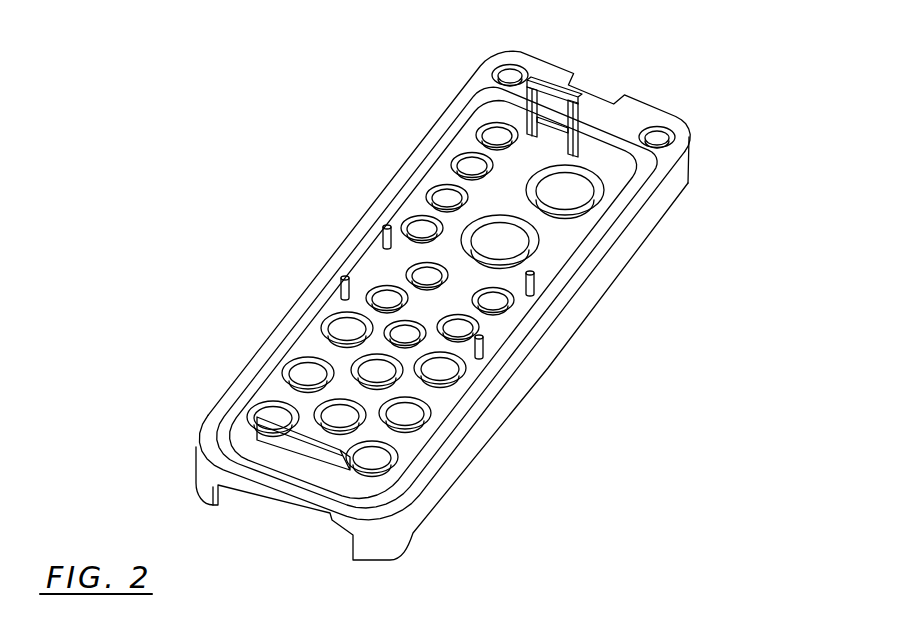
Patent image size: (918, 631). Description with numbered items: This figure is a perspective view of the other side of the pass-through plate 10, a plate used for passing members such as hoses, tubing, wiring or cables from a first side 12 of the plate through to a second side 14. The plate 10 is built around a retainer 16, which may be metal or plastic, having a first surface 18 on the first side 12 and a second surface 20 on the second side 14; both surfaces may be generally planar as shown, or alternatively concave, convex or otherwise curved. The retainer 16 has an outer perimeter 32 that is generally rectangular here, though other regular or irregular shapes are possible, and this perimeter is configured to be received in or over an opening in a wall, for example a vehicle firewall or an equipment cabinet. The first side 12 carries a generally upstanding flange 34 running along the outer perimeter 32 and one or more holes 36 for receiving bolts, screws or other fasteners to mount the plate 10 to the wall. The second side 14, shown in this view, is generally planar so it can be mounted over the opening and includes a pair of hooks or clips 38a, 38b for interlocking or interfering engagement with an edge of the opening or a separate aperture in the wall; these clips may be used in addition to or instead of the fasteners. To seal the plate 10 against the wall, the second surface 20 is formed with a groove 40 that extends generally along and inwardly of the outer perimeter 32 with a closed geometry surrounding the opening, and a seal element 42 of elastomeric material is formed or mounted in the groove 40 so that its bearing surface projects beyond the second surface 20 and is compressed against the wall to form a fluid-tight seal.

The pass-through plate 10 is at (712, 48).
The first side 12 is at (536, 395).
The second side 14 is at (368, 148).
The retainer 16 is at (691, 165).
The first surface 18 is at (566, 330).
The second surface 20 is at (307, 293).
The outer perimeter 32 is at (612, 240).
The flange 34 is at (385, 232).
The hole 36 is at (657, 137).
The hook or clip 38a is at (320, 455).
The hook or clip 38b is at (575, 90).
The groove 40 is at (465, 100).
The seal element 42 is at (435, 150).